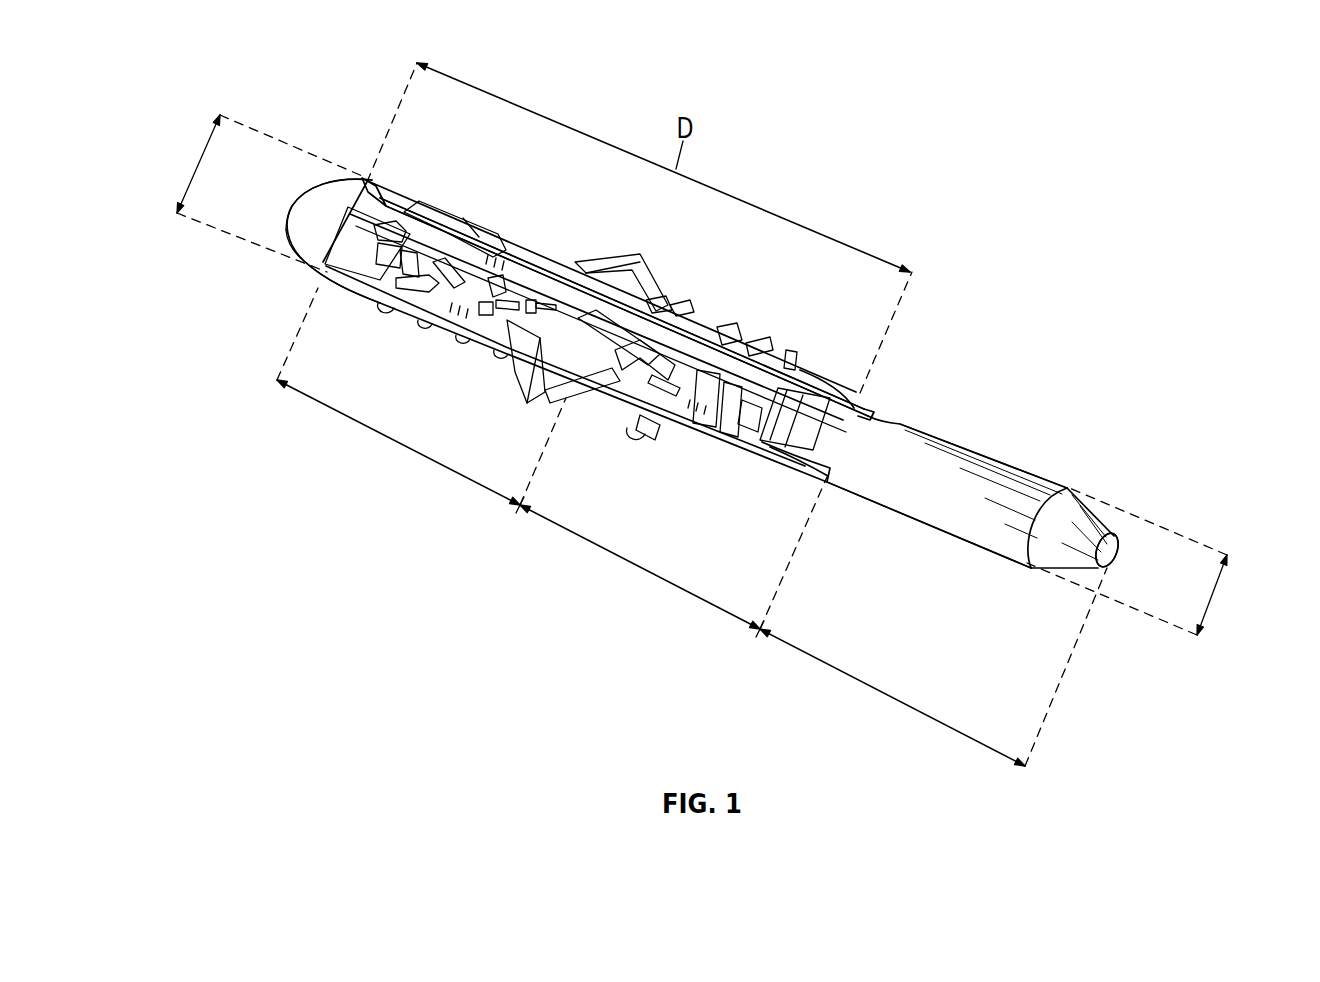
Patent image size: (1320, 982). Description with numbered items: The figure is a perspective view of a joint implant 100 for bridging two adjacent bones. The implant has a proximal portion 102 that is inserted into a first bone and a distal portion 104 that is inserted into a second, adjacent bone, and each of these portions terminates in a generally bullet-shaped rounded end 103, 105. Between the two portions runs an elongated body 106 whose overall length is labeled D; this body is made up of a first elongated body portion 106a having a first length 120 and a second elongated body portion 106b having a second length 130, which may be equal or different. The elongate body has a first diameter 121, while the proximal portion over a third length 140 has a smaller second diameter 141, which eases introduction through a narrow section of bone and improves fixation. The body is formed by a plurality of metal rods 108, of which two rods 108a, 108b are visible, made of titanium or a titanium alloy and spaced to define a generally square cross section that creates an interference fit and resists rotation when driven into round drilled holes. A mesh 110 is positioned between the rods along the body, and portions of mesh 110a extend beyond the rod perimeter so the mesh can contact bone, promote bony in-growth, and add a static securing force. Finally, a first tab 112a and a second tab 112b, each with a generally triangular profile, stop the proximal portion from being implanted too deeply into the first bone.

The joint implant 100 is at (1052, 98).
The proximal portion 102 is at (1057, 553).
The rounded end 103 is at (1110, 565).
The distal portion 104 is at (308, 235).
The rounded end 105 is at (325, 188).
The elongated body 106 is at (541, 233).
The first elongated body portion 106a is at (650, 458).
The second elongated body portion 106b is at (410, 328).
The metal rod 108 is at (457, 248).
The metal rod 108a is at (678, 302).
The metal rod 108b is at (683, 430).
The mesh 110 is at (728, 425).
The portion of mesh 110a is at (770, 348).
The first tab 112a is at (525, 397).
The second tab 112b is at (628, 265).
The first length 120 is at (400, 448).
The first diameter 121 is at (205, 157).
The second length 130 is at (640, 572).
The third length 140 is at (893, 700).
The second diameter 141 is at (1218, 592).